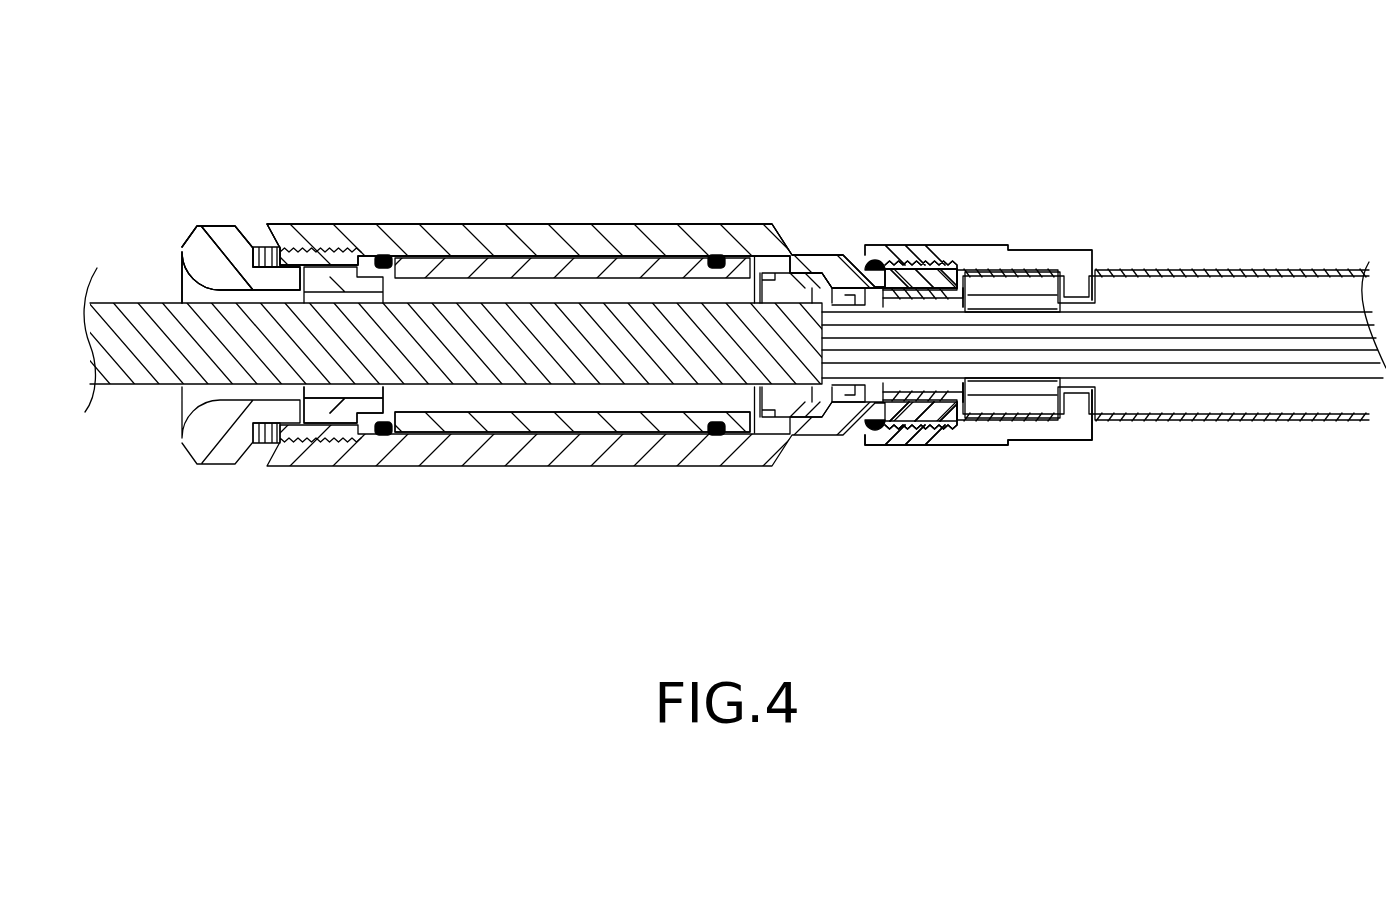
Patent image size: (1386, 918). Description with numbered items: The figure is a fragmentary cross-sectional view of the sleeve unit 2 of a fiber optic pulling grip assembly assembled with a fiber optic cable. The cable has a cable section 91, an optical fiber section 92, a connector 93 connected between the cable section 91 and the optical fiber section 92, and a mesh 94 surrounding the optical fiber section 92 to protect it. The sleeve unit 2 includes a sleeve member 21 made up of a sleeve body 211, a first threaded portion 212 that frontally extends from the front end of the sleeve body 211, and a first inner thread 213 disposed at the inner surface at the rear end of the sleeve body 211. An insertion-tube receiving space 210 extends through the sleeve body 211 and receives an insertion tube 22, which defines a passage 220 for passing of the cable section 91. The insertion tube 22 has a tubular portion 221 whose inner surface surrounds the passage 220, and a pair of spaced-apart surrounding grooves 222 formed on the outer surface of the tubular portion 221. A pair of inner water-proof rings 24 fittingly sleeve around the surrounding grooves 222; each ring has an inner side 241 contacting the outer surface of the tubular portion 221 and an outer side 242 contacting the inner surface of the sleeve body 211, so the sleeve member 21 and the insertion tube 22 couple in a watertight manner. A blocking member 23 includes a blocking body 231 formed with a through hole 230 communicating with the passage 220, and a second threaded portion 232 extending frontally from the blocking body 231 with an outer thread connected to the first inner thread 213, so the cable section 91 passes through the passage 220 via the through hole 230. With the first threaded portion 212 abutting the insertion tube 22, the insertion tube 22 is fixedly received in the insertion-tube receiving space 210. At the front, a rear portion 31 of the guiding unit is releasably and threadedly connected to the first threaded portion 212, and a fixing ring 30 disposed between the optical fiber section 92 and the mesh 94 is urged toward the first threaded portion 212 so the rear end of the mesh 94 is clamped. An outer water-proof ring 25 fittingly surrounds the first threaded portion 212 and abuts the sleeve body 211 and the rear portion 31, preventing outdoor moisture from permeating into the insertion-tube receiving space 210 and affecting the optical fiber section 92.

The sleeve unit 2 is at (604, 148).
The sleeve member 21 is at (522, 222).
The insertion tube 22 is at (548, 440).
The blocking member 23 is at (211, 484).
The inner water-proof rings 24 is at (383, 254).
The outer water-proof ring 25 is at (875, 256).
The fixing ring 30 is at (1045, 397).
The rear portion 31 is at (985, 440).
The cable section 91 is at (128, 388).
The optical fiber section 92 is at (1205, 300).
The connector 93 is at (805, 410).
The mesh 94 is at (1245, 420).
The insertion-tube receiving space 210 is at (462, 224).
The sleeve body 211 is at (685, 457).
The first threaded portion 212 is at (925, 436).
The first inner thread 213 is at (303, 430).
The passage 220 is at (333, 394).
The tubular portion 221 is at (602, 424).
The surrounding grooves 222 is at (390, 432).
The through hole 230 is at (215, 293).
The blocking body 231 is at (200, 224).
The second threaded portion 232 is at (300, 246).
The inner side 241 is at (768, 284).
The outer side 242 is at (748, 297).